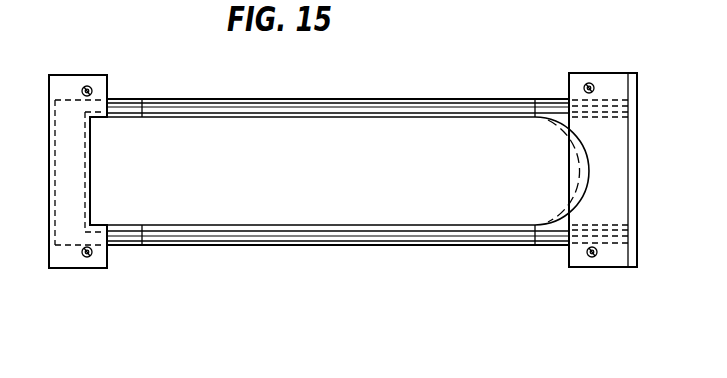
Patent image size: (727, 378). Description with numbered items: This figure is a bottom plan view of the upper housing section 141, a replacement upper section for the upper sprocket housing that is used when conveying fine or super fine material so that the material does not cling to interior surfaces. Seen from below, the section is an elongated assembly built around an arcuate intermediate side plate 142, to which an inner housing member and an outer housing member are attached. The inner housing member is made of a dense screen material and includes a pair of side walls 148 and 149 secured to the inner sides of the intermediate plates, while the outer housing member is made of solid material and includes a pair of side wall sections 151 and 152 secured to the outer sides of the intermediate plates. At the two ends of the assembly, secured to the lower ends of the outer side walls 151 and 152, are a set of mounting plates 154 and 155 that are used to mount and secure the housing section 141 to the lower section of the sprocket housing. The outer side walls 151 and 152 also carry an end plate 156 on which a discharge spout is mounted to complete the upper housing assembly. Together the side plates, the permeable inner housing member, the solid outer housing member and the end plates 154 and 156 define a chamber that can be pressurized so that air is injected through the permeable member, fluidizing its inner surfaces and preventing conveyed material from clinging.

The upper housing section 141 is at (395, 236).
The arcuate side plate 142 is at (237, 107).
The side wall 148 is at (302, 118).
The side wall 149 is at (497, 226).
The side wall section 151 is at (250, 98).
The side wall section 152 is at (487, 244).
The mounting plate 154 is at (84, 268).
The mounting plate 155 is at (609, 256).
The end plate 156 is at (637, 190).